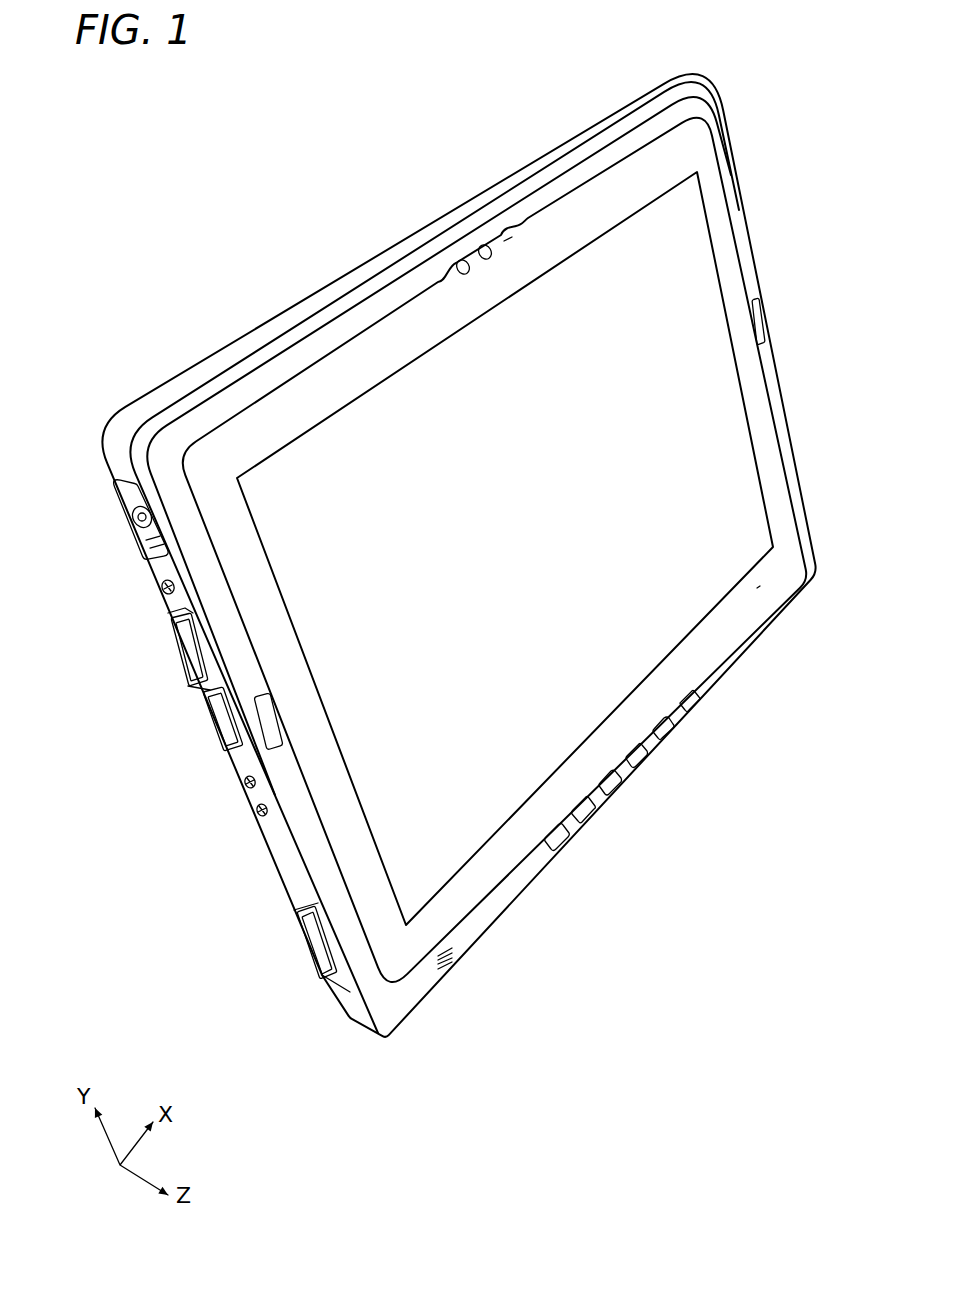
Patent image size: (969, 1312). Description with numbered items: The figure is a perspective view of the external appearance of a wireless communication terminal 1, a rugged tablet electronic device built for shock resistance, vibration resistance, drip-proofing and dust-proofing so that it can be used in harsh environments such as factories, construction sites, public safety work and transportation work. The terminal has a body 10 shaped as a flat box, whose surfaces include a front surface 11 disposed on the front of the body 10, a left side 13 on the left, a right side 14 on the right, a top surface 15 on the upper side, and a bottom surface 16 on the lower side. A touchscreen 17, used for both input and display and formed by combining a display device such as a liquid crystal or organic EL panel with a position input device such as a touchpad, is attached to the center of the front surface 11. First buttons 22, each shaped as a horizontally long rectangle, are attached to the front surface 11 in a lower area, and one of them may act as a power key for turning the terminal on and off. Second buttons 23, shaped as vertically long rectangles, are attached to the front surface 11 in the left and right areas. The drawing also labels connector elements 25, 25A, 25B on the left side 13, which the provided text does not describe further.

The wireless communication terminal 1 is at (471, 103).
The body 10 is at (150, 365).
The front surface 11 is at (757, 588).
The left side 13 is at (290, 878).
The right side 14 is at (782, 388).
The top surface 15 is at (354, 276).
The bottom surface 16 is at (506, 909).
The touchscreen 17 is at (723, 476).
The first button 22 is at (714, 697).
The second button 23 is at (759, 330).
The connectors 25 is at (138, 643).
The connector (slot type) 25A is at (192, 647).
The connector (round type) 25B is at (136, 520).